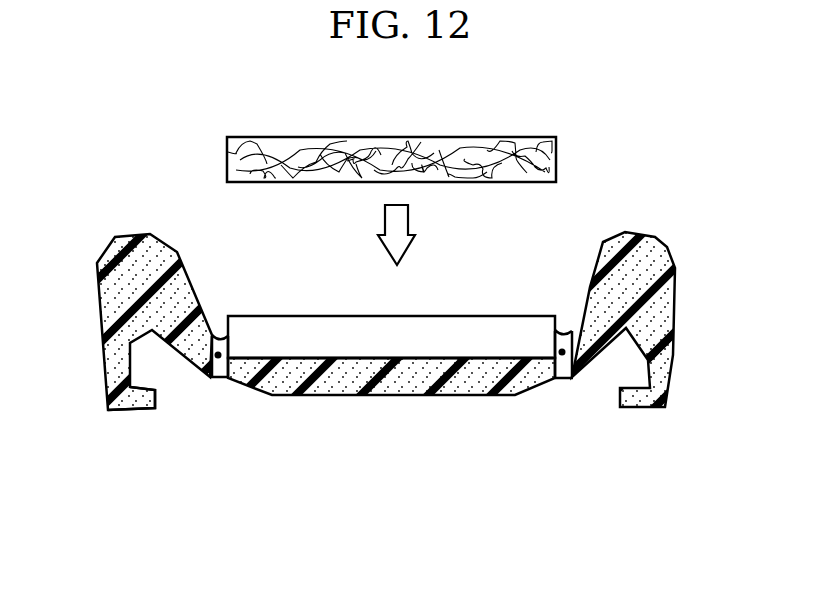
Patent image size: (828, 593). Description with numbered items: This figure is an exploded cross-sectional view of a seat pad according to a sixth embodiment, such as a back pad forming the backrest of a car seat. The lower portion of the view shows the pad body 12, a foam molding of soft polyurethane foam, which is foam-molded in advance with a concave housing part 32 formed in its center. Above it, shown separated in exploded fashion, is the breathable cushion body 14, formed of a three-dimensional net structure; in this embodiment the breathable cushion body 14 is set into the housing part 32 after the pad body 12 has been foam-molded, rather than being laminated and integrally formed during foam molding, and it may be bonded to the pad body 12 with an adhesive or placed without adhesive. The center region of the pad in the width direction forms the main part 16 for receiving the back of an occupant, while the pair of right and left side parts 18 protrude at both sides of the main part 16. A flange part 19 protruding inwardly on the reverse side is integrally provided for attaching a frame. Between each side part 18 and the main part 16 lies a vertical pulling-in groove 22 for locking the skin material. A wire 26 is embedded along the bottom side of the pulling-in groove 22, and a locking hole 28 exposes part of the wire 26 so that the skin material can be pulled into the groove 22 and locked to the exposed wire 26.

The pad body 12 is at (400, 396).
The breathable cushion body 14 is at (486, 150).
The main part 16 is at (302, 316).
The side part 18 is at (127, 243).
The flange part 19 is at (133, 408).
The vertical pulling-in groove 22 is at (218, 335).
The wire 26 is at (218, 358).
The locking hole 28 is at (562, 356).
The housing part 32 is at (490, 340).